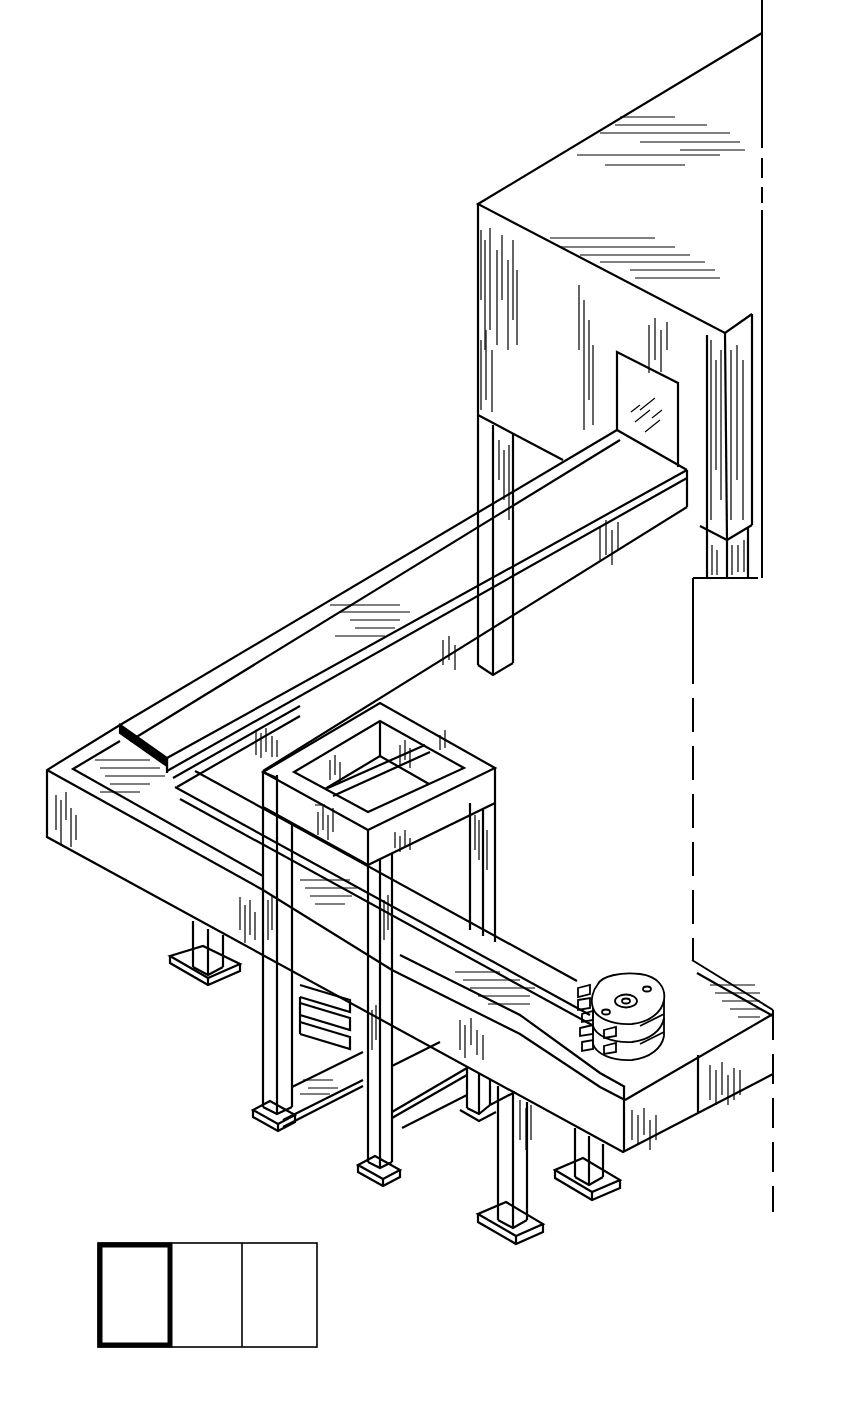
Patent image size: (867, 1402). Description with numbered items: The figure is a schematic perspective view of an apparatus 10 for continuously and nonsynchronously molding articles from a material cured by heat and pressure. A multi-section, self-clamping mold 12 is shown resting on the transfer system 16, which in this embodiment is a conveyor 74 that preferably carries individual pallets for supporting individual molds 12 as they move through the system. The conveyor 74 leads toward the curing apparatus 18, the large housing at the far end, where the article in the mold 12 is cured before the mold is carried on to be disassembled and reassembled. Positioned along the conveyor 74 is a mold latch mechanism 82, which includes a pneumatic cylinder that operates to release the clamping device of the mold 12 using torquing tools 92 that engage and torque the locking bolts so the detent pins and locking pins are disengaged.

The apparatus 10 is at (300, 275).
The mold 12 is at (636, 968).
The transfer system 16 is at (322, 570).
The curing apparatus 18 is at (512, 170).
The conveyor 74 is at (197, 722).
The mold latch mechanism 82 is at (318, 1118).
The torquing tools 92 is at (442, 868).